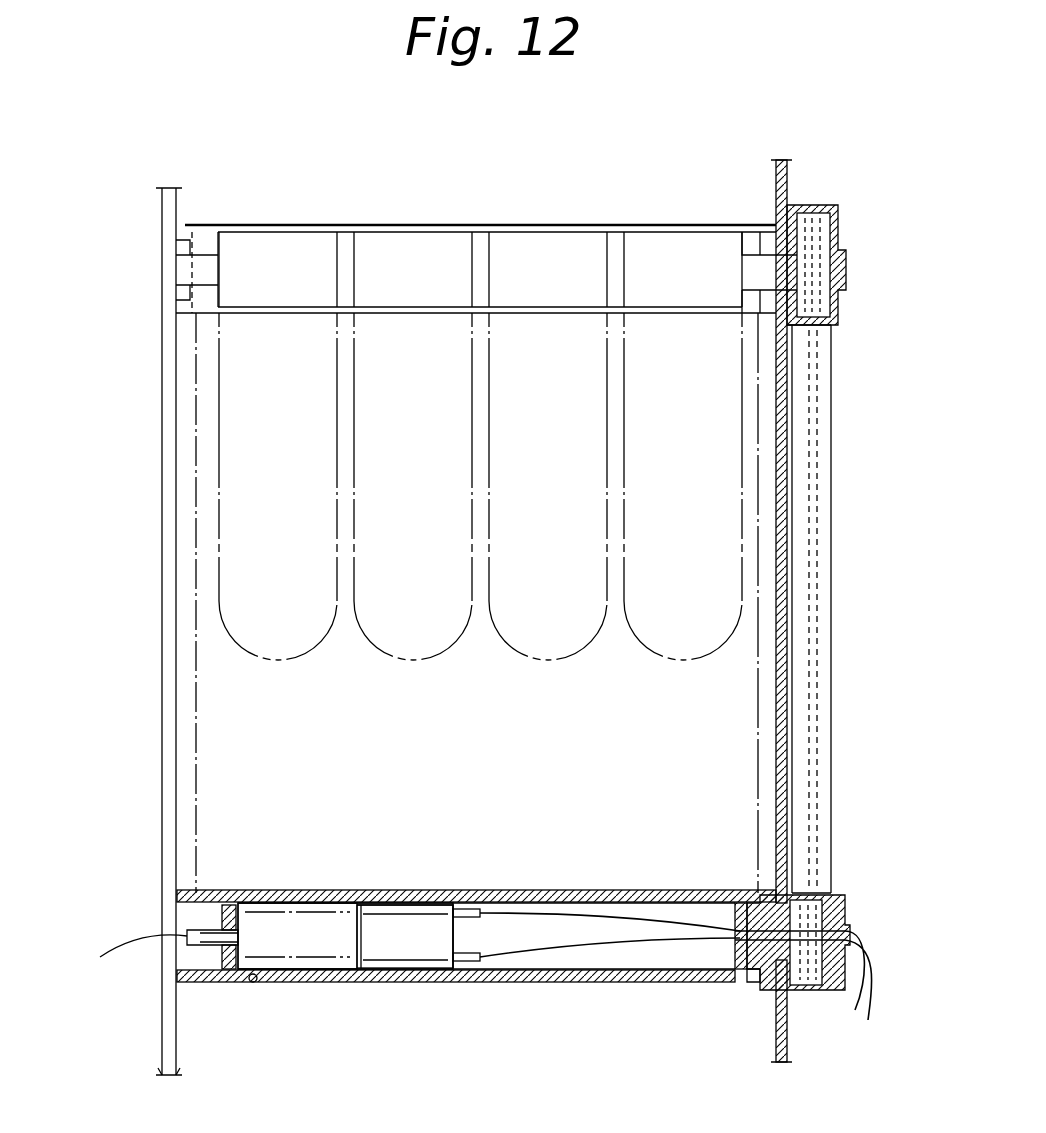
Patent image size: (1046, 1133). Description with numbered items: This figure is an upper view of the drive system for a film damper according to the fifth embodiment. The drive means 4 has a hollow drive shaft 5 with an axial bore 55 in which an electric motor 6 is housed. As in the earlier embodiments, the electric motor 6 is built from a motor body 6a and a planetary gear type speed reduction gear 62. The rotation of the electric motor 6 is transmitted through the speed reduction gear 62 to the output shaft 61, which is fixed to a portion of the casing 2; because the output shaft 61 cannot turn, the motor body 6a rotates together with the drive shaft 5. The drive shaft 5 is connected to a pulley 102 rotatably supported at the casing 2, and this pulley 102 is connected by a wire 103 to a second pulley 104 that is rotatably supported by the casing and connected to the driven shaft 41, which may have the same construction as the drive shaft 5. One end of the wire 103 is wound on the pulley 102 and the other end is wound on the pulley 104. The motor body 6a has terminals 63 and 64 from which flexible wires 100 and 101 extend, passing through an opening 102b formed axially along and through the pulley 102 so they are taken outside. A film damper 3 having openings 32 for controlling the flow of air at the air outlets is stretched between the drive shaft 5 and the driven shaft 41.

The casing 2 is at (163, 684).
The film damper 3 is at (196, 735).
The drive means 4 is at (536, 990).
The drive shaft 5 is at (400, 893).
The electric motor 6 is at (326, 903).
The motor body 6a is at (388, 966).
The openings 32 is at (380, 422).
The driven shaft 41 is at (438, 225).
The axial bore 55 is at (253, 982).
The output shaft 61 is at (135, 950).
The speed reduction gear 62 is at (305, 966).
The terminal 63 is at (472, 909).
The terminal 64 is at (478, 968).
The flexible wire 100 is at (576, 913).
The flexible wire 101 is at (586, 976).
The pulley 102 is at (830, 905).
The opening 102b is at (731, 976).
The wire 103 is at (798, 880).
The pulley 104 is at (783, 258).